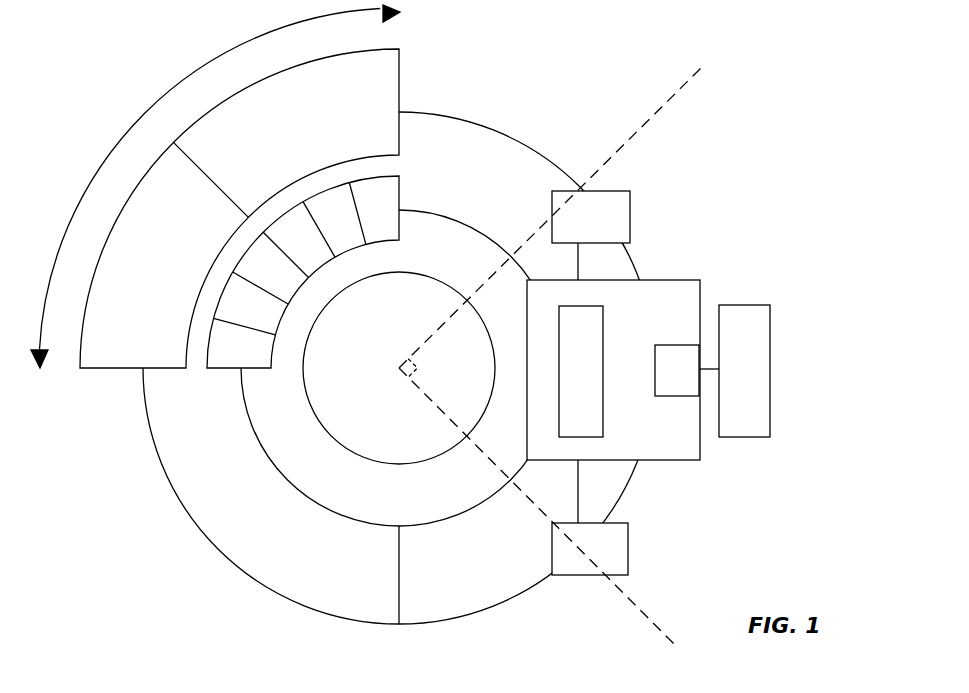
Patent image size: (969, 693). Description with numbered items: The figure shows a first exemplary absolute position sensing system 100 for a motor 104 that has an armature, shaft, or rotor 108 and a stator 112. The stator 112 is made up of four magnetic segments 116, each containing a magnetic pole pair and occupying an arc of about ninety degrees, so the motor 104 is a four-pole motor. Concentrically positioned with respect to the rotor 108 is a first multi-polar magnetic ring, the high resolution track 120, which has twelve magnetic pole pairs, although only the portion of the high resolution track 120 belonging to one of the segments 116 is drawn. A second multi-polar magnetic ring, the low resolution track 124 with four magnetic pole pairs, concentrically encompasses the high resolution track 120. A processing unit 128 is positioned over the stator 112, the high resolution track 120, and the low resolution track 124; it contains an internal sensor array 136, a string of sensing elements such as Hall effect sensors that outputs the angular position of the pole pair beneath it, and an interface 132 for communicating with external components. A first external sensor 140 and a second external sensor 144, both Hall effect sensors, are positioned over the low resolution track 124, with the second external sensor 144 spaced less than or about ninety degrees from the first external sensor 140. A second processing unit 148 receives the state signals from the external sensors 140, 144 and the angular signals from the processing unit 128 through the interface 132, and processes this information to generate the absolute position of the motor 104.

The absolute position sensing system 100 is at (752, 128).
The motor 104 is at (490, 608).
The rotor 108 is at (388, 274).
The stator 112 is at (222, 556).
The magnetic segments 116 is at (130, 125).
The high resolution track 120 is at (243, 368).
The low resolution track 124 is at (132, 368).
The processing unit 128 is at (648, 280).
The interface 132 is at (655, 365).
The internal sensor array 136 is at (603, 335).
The first external sensor 140 is at (628, 548).
The second external sensor 144 is at (630, 202).
The second processing unit 148 is at (772, 305).